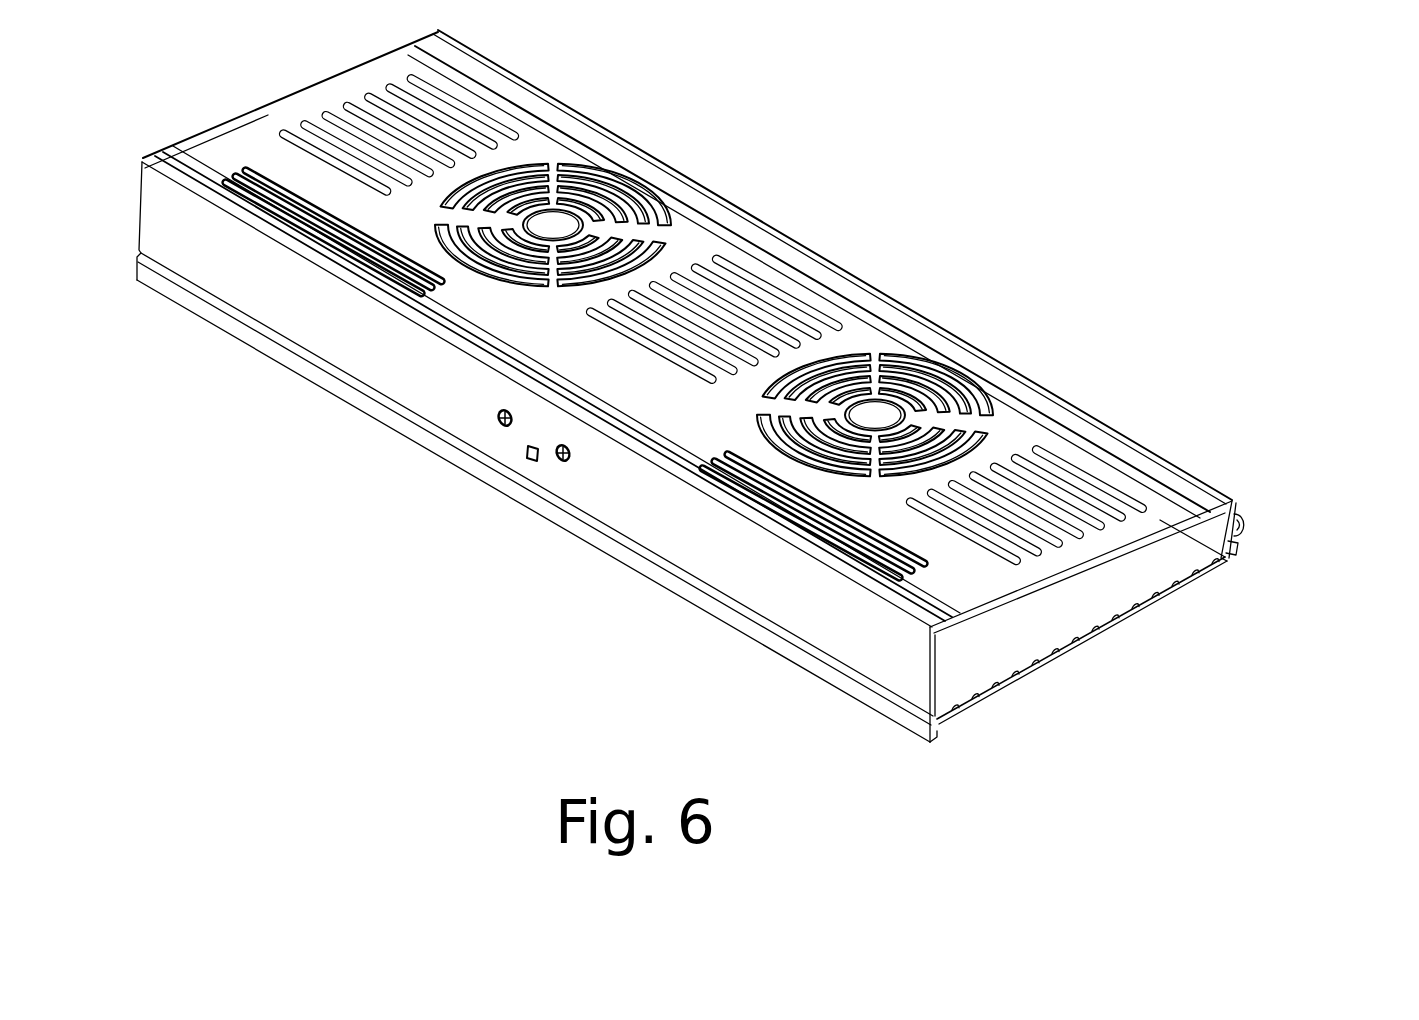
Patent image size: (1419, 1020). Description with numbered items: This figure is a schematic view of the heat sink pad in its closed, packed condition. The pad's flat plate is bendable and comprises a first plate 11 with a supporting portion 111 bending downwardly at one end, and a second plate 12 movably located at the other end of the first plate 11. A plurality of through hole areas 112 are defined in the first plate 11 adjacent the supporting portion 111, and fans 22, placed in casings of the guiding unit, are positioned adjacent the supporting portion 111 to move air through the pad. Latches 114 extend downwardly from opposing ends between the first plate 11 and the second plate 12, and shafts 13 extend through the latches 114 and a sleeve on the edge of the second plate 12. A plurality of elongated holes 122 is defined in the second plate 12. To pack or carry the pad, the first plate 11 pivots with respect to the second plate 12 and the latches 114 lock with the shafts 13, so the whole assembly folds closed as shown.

The first plate 11 is at (1025, 433).
The second plate 12 is at (350, 385).
The shafts 13 is at (1243, 530).
The fans 22 is at (563, 223).
The supporting portion 111 is at (630, 505).
The through hole areas 112 is at (900, 360).
The latches 114 is at (1243, 547).
The elongated holes 122 is at (987, 612).